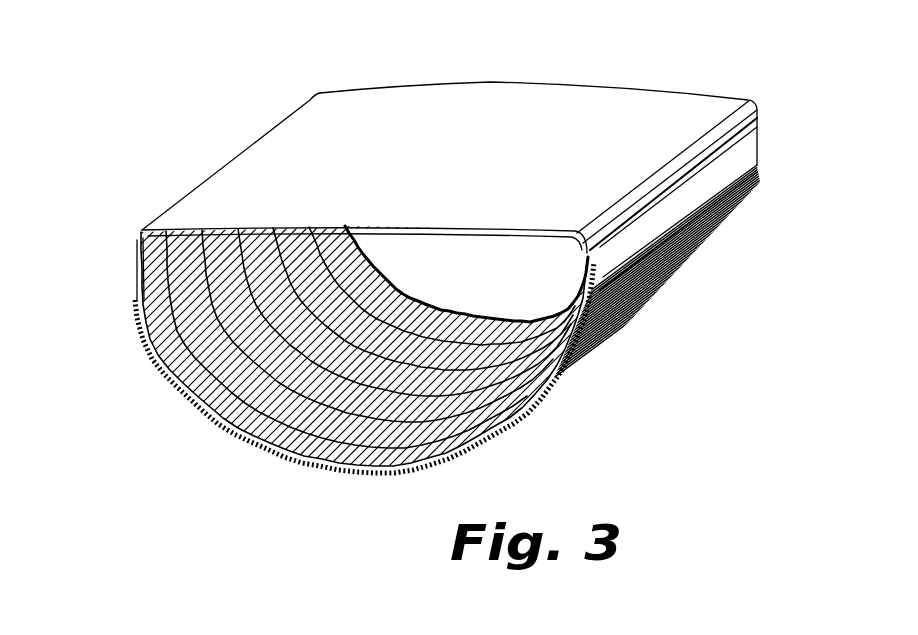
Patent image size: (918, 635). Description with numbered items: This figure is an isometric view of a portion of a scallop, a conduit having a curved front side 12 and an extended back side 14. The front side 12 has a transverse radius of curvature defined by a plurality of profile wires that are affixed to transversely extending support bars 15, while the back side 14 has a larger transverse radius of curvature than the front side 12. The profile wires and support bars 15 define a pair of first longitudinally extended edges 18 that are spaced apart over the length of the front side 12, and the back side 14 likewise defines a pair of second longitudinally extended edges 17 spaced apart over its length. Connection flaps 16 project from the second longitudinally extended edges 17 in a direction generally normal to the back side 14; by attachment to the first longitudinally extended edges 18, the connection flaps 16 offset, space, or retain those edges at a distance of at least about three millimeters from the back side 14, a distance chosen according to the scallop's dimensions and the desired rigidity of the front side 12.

The front side 12 is at (291, 478).
The back side 14 is at (485, 83).
The support bars 15 is at (468, 450).
The connection flaps 16 is at (637, 313).
The second longitudinally extended edges 17 is at (750, 100).
The first longitudinally extended edges 18 is at (758, 165).